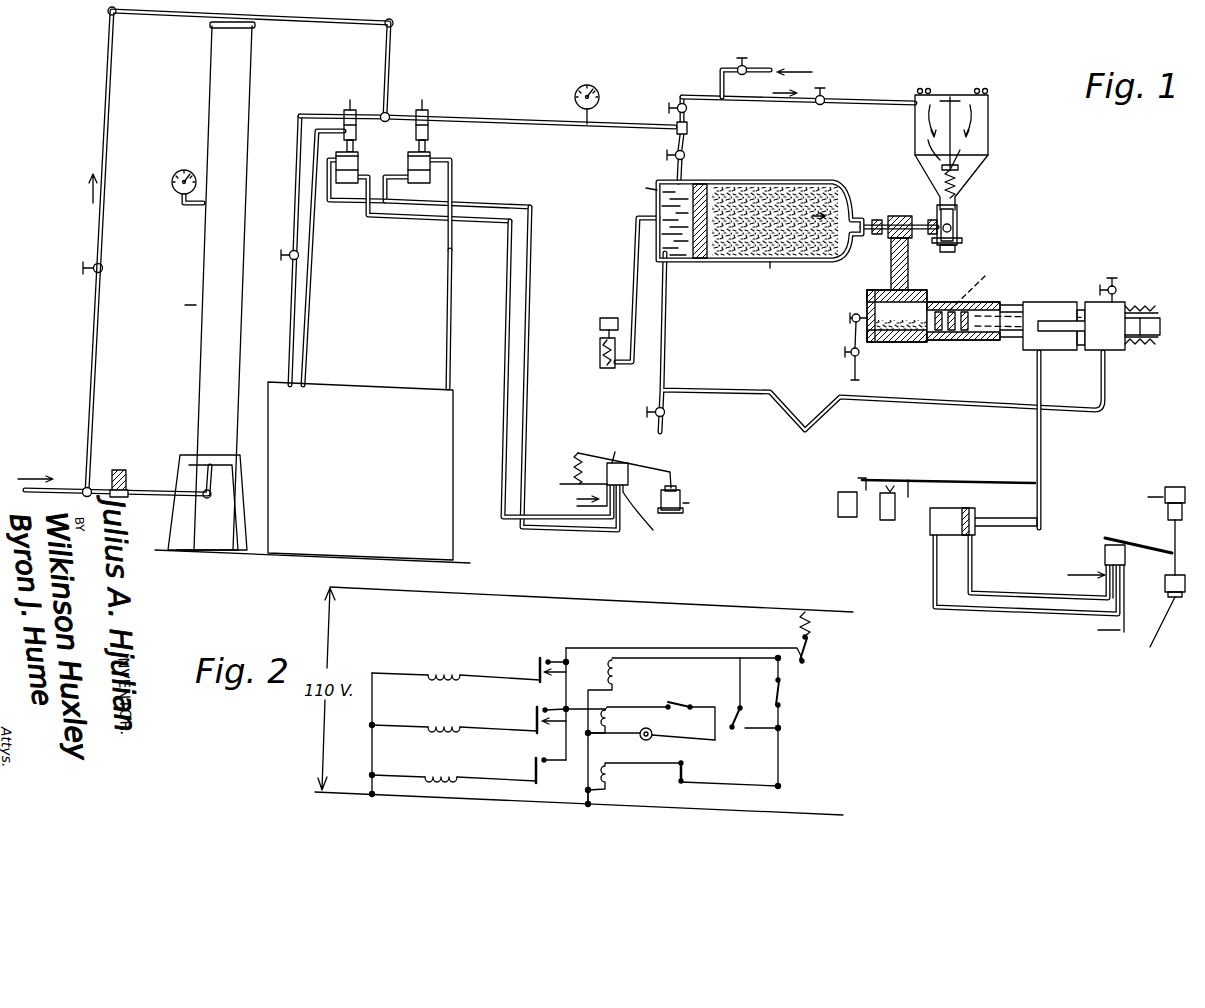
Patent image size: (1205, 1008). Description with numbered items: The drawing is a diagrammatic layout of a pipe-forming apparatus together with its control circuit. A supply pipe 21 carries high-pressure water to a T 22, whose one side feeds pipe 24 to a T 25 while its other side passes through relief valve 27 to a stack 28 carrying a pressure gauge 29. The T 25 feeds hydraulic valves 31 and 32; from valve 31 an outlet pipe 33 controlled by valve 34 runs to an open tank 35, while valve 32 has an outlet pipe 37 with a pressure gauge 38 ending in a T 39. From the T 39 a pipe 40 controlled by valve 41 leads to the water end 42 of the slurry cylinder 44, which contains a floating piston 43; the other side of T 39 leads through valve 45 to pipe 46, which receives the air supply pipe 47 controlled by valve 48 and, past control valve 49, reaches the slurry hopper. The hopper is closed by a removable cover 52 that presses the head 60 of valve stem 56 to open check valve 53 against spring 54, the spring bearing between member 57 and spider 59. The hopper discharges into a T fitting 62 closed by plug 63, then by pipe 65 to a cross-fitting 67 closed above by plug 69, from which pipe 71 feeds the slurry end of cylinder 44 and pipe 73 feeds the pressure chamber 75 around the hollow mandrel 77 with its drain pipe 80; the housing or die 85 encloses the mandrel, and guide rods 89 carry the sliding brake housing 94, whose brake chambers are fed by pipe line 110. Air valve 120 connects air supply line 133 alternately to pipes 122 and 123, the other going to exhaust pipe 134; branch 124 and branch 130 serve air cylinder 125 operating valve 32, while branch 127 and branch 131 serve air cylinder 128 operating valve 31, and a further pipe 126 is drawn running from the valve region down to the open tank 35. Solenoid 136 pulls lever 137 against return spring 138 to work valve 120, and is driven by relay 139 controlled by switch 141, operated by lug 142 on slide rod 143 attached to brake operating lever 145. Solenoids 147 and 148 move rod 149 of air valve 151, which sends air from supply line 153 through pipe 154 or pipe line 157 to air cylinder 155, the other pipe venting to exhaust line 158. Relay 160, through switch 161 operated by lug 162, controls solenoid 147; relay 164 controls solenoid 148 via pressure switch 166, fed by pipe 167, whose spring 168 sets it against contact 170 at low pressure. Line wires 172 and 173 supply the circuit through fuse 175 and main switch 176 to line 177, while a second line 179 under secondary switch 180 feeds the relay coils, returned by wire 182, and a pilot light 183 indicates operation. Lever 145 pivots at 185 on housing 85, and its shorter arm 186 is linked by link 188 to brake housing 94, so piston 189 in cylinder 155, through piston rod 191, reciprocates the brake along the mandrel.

In FIG. 1, the supply pipe 21 is at (60, 491).
In FIG. 1, the T 22 is at (88, 497).
In FIG. 1, the pipe 24 is at (104, 152).
In FIG. 1, the T 25 is at (379, 131).
In FIG. 1, the relief valve 27 is at (121, 498).
In FIG. 1, the stack 28 is at (227, 330).
In FIG. 1, the pressure gauge 29 is at (173, 191).
In FIG. 1, the hydraulic valve 31 is at (343, 111).
In FIG. 1, the hydraulic valve 32 is at (430, 117).
In FIG. 1, the outlet pipe 33 is at (296, 183).
In FIG. 1, the valve 34 is at (300, 258).
In FIG. 1, the open tank 35 is at (366, 389).
In FIG. 1, the outlet pipe 37 is at (512, 121).
In FIG. 1, the pressure gauge 38 is at (588, 85).
In FIG. 1, the T 39 is at (690, 130).
In FIG. 1, the pipe 40 is at (686, 142).
In FIG. 1, the valve 41 is at (675, 154).
In FIG. 1, the pressure or water end 42 is at (657, 206).
In FIG. 1, the floating piston 43 is at (705, 184).
In FIG. 1, the slurry cylinder 44 is at (770, 184).
In FIG. 1, the valve 45 is at (678, 102).
In FIG. 1, the pipe 46 is at (742, 101).
In FIG. 1, the air supply pipe 47 is at (718, 70).
In FIG. 1, the valve 48 is at (737, 65).
In FIG. 1, the control valve 49 is at (827, 97).
In FIG. 1, the cover 52 is at (937, 90).
In FIG. 1, the check valve 53 is at (958, 222).
In FIG. 1, the spring 54 is at (957, 175).
In FIG. 1, the valve stem 56 is at (954, 118).
In FIG. 1, the member 57 is at (943, 164).
In FIG. 1, the spider 59 is at (940, 184).
In FIG. 1, the head 60 is at (951, 100).
In FIG. 1, the T fitting 62 is at (1016, 233).
In FIG. 1, the plug 63 is at (947, 252).
In FIG. 1, the pipe 65 is at (933, 236).
In FIG. 1, the cross-fitting 67 is at (888, 222).
In FIG. 1, the plug 69 is at (905, 215).
In FIG. 1, the pipe 71 is at (868, 232).
In FIG. 1, the pipe 73 is at (893, 250).
In FIG. 1, the pressure chamber 75 is at (887, 344).
In FIG. 1, the mandrel 77 is at (866, 305).
In FIG. 1, the drain pipe 80 is at (851, 320).
In FIG. 1, the housing member or die 85 is at (944, 302).
In FIG. 1, the rods 89 is at (1120, 292).
In FIG. 1, the brake housing 94 is at (1120, 374).
In FIG. 1, the pipe line 110 is at (667, 328).
In FIG. 1, the air valve 120 is at (627, 472).
In FIG. 1, the pipe 122 is at (529, 262).
In FIG. 1, the pipe 123 is at (502, 314).
In FIG. 1, the branch 124 is at (390, 186).
In FIG. 1, the air cylinder 125 is at (435, 158).
In FIG. 1, the return pipe 126 is at (446, 297).
In FIG. 1, the branch 127 is at (333, 204).
In FIG. 1, the air cylinder 128 is at (338, 166).
In FIG. 1, the branch 130 is at (454, 172).
In FIG. 1, the branch 131 is at (369, 219).
In FIG. 1, the air pressure supply line 133 is at (586, 508).
In FIG. 1, the air exhaust pipe 134 is at (642, 529).
In FIG. 1, the solenoid 136 is at (671, 498).
In FIG. 2, the solenoid 136 is at (440, 772).
In FIG. 1, the lever 137 is at (660, 467).
In FIG. 1, the return spring 138 is at (574, 460).
In FIG. 2, the relay 139 is at (600, 777).
In FIG. 1, the switch 141 is at (881, 509).
In FIG. 2, the switch 141 is at (688, 766).
In FIG. 1, the lug 142 is at (906, 500).
In FIG. 1, the slide rod 143 is at (946, 480).
In FIG. 1, the brake operating lever 145 is at (1044, 437).
In FIG. 1, the solenoid 147 is at (1172, 486).
In FIG. 2, the solenoid 147 is at (445, 722).
In FIG. 1, the solenoid 148 is at (1172, 590).
In FIG. 2, the solenoid 148 is at (448, 670).
In FIG. 1, the rod 149 is at (1170, 529).
In FIG. 1, the air valve 151 is at (1107, 545).
In FIG. 1, the air supply line 153 is at (1098, 570).
In FIG. 1, the pipe 154 is at (1013, 599).
In FIG. 1, the air cylinder 155 is at (963, 514).
In FIG. 1, the pipe line 157 is at (953, 611).
In FIG. 1, the air exhaust line 158 is at (1122, 634).
In FIG. 2, the relay 160 is at (600, 720).
In FIG. 1, the switch 161 is at (838, 506).
In FIG. 2, the switch 161 is at (675, 704).
In FIG. 1, the lug 162 is at (867, 477).
In FIG. 2, the relay 164 is at (607, 668).
In FIG. 1, the pressure switch 166 is at (598, 325).
In FIG. 2, the pressure switch 166 is at (759, 745).
In FIG. 1, the pipe 167 is at (634, 244).
In FIG. 1, the spring 168 is at (598, 351).
In FIG. 2, the contact 170 is at (742, 712).
In FIG. 2, the line wire 172 is at (340, 790).
In FIG. 2, the line wire 173 is at (375, 593).
In FIG. 2, the protective fuse 175 is at (813, 624).
In FIG. 2, the main switch 176 is at (812, 650).
In FIG. 2, the line 177 is at (641, 647).
In FIG. 2, the second line 179 is at (787, 680).
In FIG. 2, the secondary switch 180 is at (783, 700).
In FIG. 2, the wire 182 is at (605, 799).
In FIG. 2, the pilot light 183 is at (653, 733).
In FIG. 1, the pivot 185 is at (1030, 356).
In FIG. 1, the lever arm 186 is at (1040, 318).
In FIG. 1, the link 188 is at (1064, 333).
In FIG. 1, the piston 189 is at (932, 534).
In FIG. 1, the piston rod 191 is at (1000, 527).